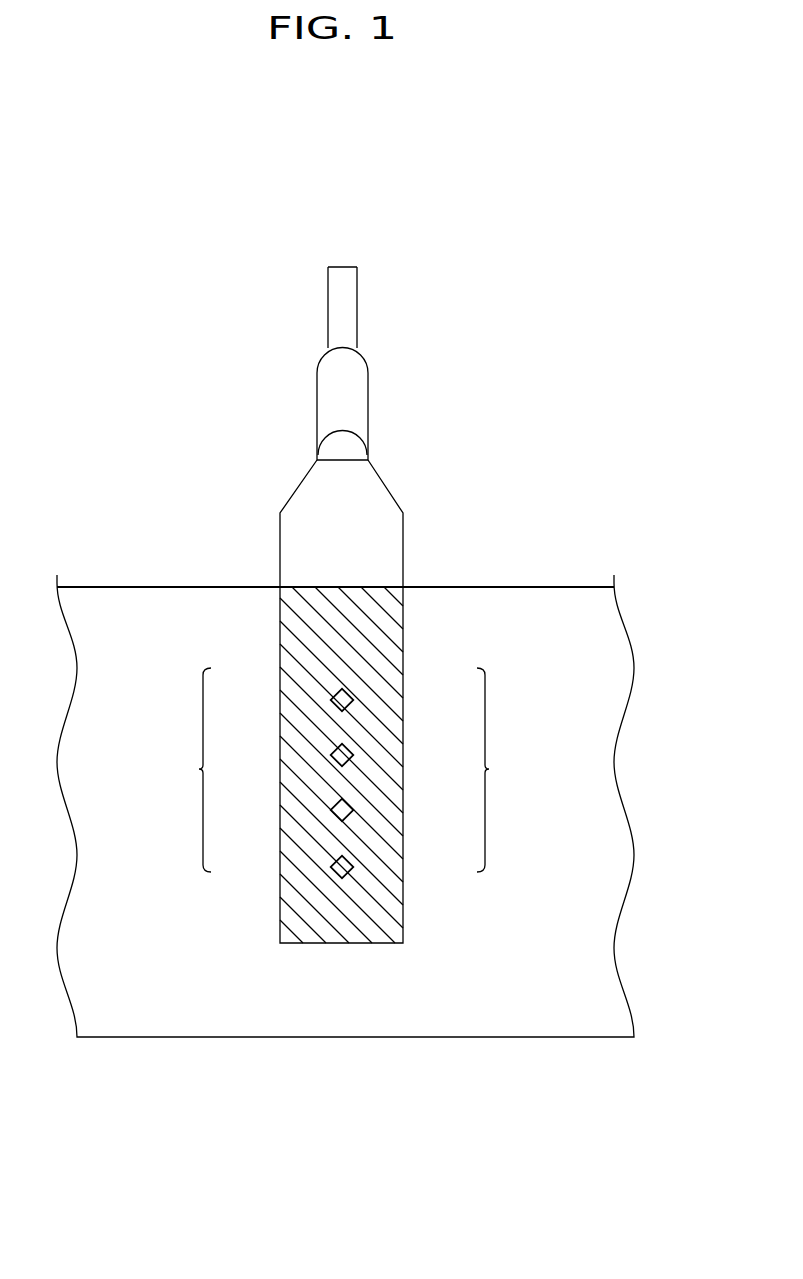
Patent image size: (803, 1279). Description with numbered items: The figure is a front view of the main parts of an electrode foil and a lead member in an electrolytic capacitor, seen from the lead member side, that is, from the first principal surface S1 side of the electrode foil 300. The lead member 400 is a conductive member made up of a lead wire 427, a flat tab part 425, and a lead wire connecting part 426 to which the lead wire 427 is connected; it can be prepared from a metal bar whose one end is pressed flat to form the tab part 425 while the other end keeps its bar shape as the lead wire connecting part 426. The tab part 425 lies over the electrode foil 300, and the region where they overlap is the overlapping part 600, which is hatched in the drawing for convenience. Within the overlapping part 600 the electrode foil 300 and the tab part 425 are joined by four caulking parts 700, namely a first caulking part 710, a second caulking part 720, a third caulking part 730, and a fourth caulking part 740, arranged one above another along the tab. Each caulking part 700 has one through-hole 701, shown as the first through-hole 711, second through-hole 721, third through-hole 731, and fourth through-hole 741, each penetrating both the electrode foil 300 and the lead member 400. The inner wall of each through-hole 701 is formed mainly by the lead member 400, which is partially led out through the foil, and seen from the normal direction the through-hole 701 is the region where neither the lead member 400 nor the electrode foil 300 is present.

The electrode foil 300 is at (181, 1054).
The first principal surface S1 is at (562, 621).
The lead member 400 is at (286, 466).
The tab part 425 is at (368, 493).
The lead wire connecting part 426 is at (355, 398).
The lead wire 427 is at (347, 302).
The overlapping part 600 is at (416, 630).
The caulking parts 700 is at (186, 770).
The through-hole 701 is at (503, 770).
The first caulking part 710 is at (345, 692).
The first through-hole 711 is at (352, 707).
The second caulking part 720 is at (345, 747).
The second through-hole 721 is at (352, 762).
The third caulking part 730 is at (345, 802).
The third through-hole 731 is at (352, 817).
The fourth caulking part 740 is at (345, 858).
The fourth through-hole 741 is at (352, 874).